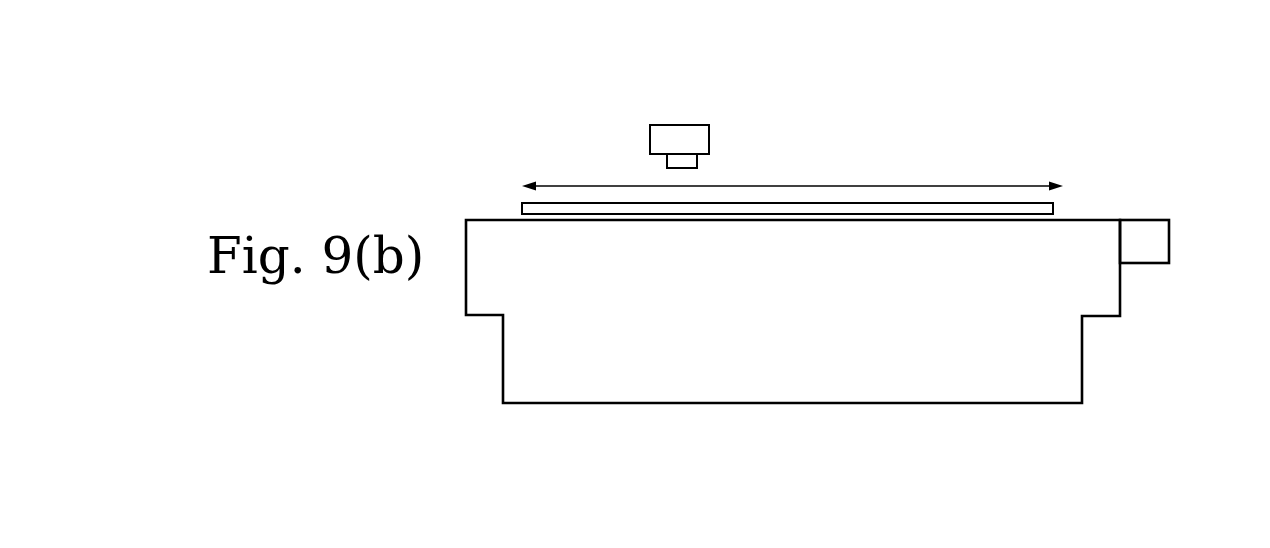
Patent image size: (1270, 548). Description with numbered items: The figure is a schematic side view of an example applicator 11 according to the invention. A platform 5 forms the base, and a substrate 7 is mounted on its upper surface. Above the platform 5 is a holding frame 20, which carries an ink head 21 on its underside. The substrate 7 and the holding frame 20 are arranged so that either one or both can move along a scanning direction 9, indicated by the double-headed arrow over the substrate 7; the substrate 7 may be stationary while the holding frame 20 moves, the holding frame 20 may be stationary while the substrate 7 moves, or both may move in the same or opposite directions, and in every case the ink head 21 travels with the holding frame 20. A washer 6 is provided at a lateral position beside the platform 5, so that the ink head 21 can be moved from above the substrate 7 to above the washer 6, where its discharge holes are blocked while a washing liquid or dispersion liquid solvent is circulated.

The platform 5 is at (1080, 365).
The washer 6 is at (1167, 238).
The substrate 7 is at (1057, 207).
The scanning direction 9 is at (962, 185).
The applicator 11 is at (448, 68).
The holding frame 20 is at (657, 132).
The ink head 21 is at (653, 162).